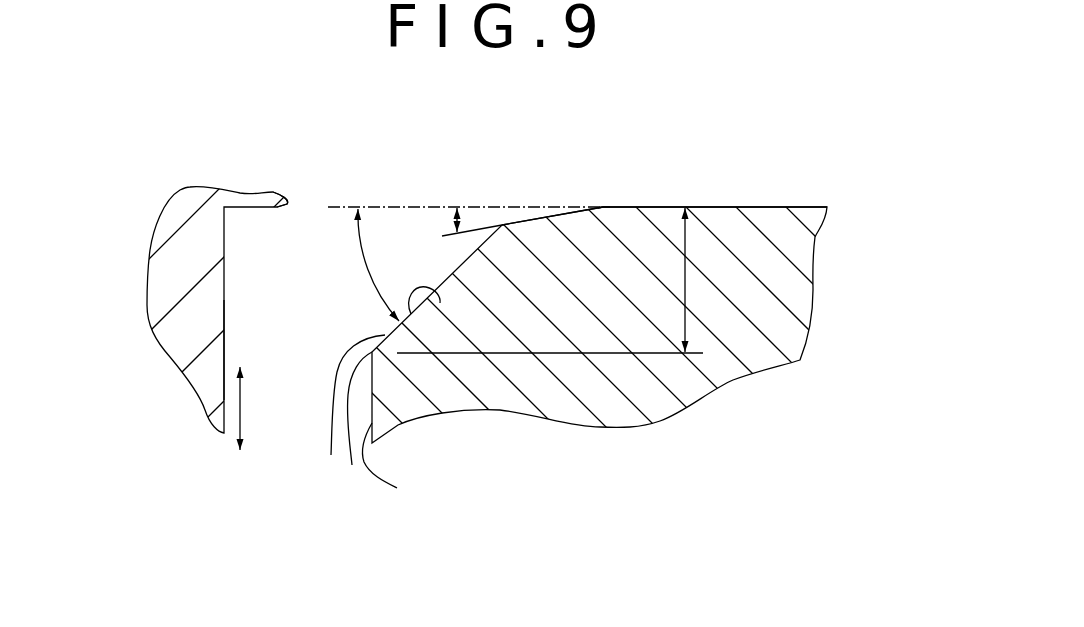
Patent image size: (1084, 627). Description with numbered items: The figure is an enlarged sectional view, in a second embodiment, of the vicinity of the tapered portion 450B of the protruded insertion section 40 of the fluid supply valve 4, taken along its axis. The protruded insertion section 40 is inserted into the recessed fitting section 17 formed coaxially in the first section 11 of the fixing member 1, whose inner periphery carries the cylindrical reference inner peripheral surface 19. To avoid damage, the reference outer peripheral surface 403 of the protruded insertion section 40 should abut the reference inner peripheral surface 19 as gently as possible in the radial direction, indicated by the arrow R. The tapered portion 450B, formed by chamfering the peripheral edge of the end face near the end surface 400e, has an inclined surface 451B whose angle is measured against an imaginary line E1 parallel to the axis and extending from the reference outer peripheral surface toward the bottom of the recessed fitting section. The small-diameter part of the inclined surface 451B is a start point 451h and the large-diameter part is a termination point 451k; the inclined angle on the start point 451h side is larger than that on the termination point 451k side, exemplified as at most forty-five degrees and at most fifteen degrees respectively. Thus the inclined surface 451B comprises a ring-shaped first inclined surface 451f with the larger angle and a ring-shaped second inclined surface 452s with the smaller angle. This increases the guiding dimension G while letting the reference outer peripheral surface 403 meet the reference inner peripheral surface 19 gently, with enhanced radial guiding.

The fixing member 1 is at (225, 306).
The first section 11 is at (213, 297).
The reference inner peripheral surface 19 is at (279, 208).
The recessed fitting section 17 is at (269, 350).
The radial direction R is at (243, 412).
The imaginary line E1 is at (373, 207).
The protruded insertion section 40 is at (450, 310).
The fluid supply valve 4 is at (770, 360).
The reference outer peripheral surface 403 is at (720, 206).
The second inclined surface 452s is at (557, 213).
The termination point 451k is at (604, 206).
The guiding dimension G is at (688, 282).
The inclined surface 451B is at (462, 397).
The first inclined surface 451f is at (440, 303).
The tapered portion 450B is at (331, 455).
The start point 451h is at (352, 465).
The end surface 400e is at (397, 488).